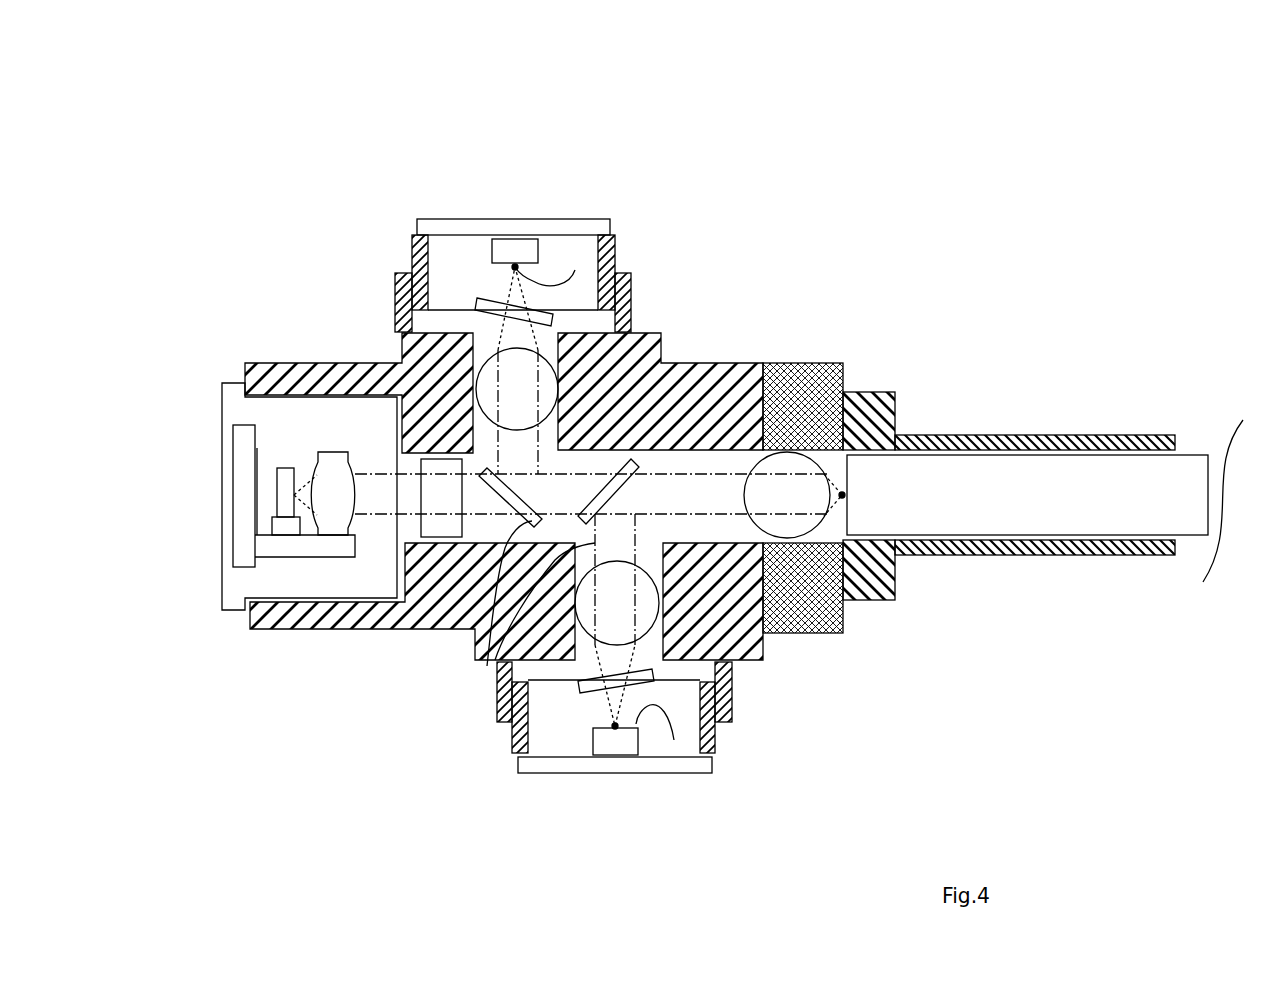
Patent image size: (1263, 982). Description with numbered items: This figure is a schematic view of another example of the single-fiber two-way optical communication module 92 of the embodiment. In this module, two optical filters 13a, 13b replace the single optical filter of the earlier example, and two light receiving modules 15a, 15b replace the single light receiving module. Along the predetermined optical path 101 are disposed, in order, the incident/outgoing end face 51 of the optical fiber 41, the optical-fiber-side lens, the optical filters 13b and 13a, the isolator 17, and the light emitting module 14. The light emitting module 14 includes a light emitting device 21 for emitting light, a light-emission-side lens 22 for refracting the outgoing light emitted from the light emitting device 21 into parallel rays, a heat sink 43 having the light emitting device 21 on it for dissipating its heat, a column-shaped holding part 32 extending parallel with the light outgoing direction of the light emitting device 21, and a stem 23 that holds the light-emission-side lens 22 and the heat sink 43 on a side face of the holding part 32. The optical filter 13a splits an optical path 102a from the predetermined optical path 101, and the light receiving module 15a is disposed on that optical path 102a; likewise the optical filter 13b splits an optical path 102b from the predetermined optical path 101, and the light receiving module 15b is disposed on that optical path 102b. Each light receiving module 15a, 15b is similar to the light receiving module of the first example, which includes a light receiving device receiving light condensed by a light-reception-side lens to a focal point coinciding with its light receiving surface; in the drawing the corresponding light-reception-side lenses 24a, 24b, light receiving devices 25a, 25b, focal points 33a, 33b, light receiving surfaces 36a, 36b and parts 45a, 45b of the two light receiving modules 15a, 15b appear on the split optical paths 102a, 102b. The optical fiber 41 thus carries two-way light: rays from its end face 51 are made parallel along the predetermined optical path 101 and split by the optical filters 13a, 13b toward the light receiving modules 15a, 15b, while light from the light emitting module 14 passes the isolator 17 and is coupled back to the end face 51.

The light receiving module 15a is at (520, 124).
The optical filter 45a is at (478, 296).
The light receiving element 25a is at (505, 228).
The cable 33a is at (575, 270).
The condensing lens 24a is at (486, 339).
The wiring 36a is at (551, 272).
The optical path 102a is at (497, 447).
The optical filter 13b is at (702, 477).
The predetermined optical path 101 is at (620, 458).
The single-fiber two-way optical communication module 92 is at (806, 266).
The optical fiber 41 is at (1188, 582).
The light emitting module 14 is at (173, 422).
The light-emission-side lens 22 is at (257, 448).
The light emitting device 21 is at (278, 462).
The stem 23 is at (222, 491).
The heat sink 43 is at (270, 523).
The holding part 32 is at (265, 578).
The isolator 17 is at (418, 528).
The optical filter 13a is at (455, 630).
The optical path 102b is at (495, 660).
The incident/outgoing end face 51 is at (838, 502).
The condensing lens 24b is at (590, 654).
The optical filter 45b is at (578, 693).
The light receiving element 25b is at (603, 771).
The wiring 36b is at (620, 722).
The cable 33b is at (674, 740).
The light receiving module 15b is at (622, 868).